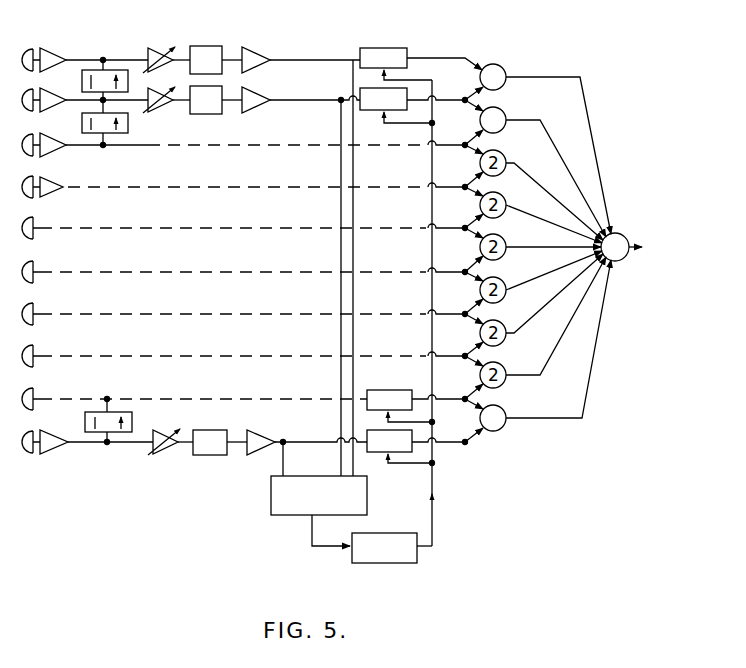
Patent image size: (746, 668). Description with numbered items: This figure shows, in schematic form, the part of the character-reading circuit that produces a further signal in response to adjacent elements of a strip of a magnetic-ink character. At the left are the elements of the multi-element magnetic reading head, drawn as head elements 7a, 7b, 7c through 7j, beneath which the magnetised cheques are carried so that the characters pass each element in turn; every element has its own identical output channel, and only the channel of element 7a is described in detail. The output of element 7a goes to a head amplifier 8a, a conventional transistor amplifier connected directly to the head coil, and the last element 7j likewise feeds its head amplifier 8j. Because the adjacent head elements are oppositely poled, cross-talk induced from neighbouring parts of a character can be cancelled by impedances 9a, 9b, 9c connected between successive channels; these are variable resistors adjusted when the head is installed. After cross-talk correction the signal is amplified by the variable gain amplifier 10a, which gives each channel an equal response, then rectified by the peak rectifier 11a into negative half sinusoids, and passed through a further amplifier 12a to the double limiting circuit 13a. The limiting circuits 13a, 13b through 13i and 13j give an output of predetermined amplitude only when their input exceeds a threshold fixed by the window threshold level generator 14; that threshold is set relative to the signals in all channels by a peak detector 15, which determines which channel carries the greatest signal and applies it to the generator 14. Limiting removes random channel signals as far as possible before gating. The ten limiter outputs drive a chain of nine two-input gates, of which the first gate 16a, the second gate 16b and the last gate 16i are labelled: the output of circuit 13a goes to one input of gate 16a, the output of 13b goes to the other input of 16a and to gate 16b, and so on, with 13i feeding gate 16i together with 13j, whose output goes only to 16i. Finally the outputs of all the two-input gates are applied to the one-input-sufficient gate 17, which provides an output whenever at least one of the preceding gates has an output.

The magnetic reading head element 7a is at (30, 51).
The magnetic reading head element 7b is at (30, 91).
The magnetic reading head element 7c is at (30, 136).
The magnetic reading head element 7j is at (31, 452).
The head amplifier 8a is at (53, 51).
The head amplifier 8j is at (54, 451).
The impedance 9a is at (92, 80).
The impedance 9b is at (92, 122).
The impedance 9c is at (96, 420).
The variable gain amplifier 10a is at (159, 52).
The peak rectifier 11a is at (206, 49).
The amplifier 12a is at (257, 52).
The double limiting circuit 13a is at (421, 53).
The double limiting circuit 13b is at (373, 102).
The double limiting circuit 13i is at (416, 397).
The double limiting circuit 13j is at (395, 443).
The window threshold level generator 14 is at (392, 559).
The peak detector 15 is at (306, 494).
The "2" gate 16a is at (505, 68).
The "2" gate 16b is at (505, 112).
The "2" gate 16i is at (505, 432).
The "1" gate 17 is at (620, 237).